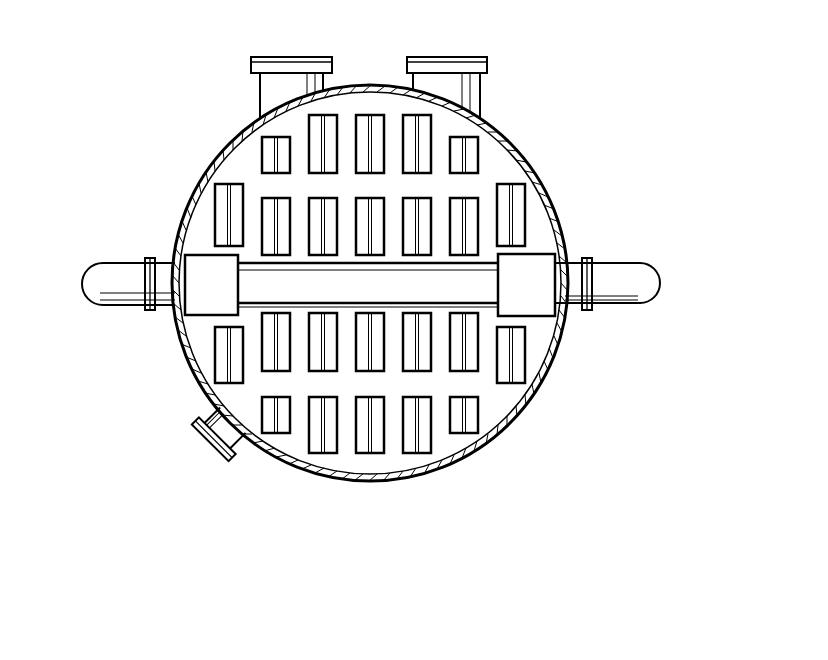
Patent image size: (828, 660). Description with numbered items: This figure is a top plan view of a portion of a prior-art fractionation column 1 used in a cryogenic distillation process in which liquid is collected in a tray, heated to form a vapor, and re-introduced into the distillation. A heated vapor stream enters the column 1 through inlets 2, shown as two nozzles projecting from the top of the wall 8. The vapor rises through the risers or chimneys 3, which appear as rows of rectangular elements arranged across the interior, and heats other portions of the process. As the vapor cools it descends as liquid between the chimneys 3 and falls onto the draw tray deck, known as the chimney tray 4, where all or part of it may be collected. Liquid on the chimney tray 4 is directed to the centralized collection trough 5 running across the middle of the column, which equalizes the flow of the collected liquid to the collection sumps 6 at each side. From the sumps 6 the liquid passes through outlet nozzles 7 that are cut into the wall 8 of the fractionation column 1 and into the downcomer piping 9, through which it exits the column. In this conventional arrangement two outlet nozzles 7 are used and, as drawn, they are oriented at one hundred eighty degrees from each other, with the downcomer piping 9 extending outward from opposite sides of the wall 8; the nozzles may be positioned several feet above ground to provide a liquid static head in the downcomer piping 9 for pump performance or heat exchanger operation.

The fractionation column 1 is at (152, 64).
The inlets 2 is at (405, 65).
The chimneys 3 is at (503, 183).
The chimney tray 4 is at (237, 176).
The centralized collection trough 5 is at (255, 285).
The collection sump 6 is at (535, 302).
The outlet nozzles 7 is at (572, 270).
The wall 8 is at (498, 410).
The downcomer piping 9 is at (370, 268).